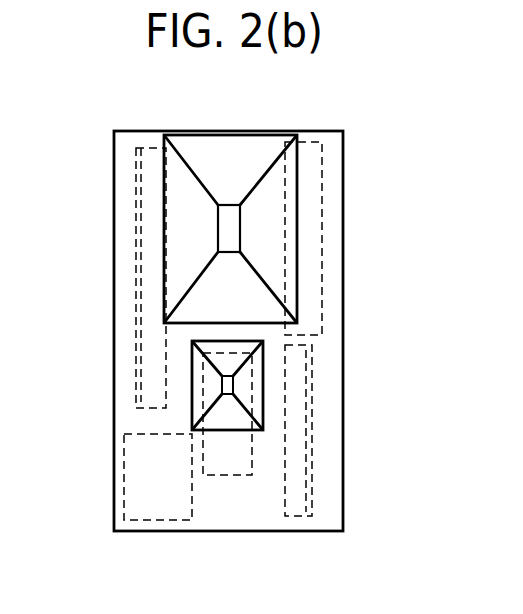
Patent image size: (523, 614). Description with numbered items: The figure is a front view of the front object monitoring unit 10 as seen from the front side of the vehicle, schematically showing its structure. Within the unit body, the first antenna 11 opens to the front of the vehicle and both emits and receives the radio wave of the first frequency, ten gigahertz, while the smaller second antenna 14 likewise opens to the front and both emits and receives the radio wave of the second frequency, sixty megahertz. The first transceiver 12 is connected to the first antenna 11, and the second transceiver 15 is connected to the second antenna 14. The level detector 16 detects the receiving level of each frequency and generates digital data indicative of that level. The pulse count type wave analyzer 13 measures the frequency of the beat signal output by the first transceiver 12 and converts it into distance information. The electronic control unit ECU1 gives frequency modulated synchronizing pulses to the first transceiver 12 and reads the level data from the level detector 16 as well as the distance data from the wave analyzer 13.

The front object monitoring unit 10 is at (343, 162).
The first antenna 11 is at (273, 218).
The first transceiver 12 is at (135, 215).
The pulse count type wave analyzer 13 is at (308, 268).
The second antenna 14 is at (252, 378).
The second transceiver 15 is at (217, 473).
The level detector 16 is at (155, 508).
The electronic control unit ECU1 is at (297, 468).